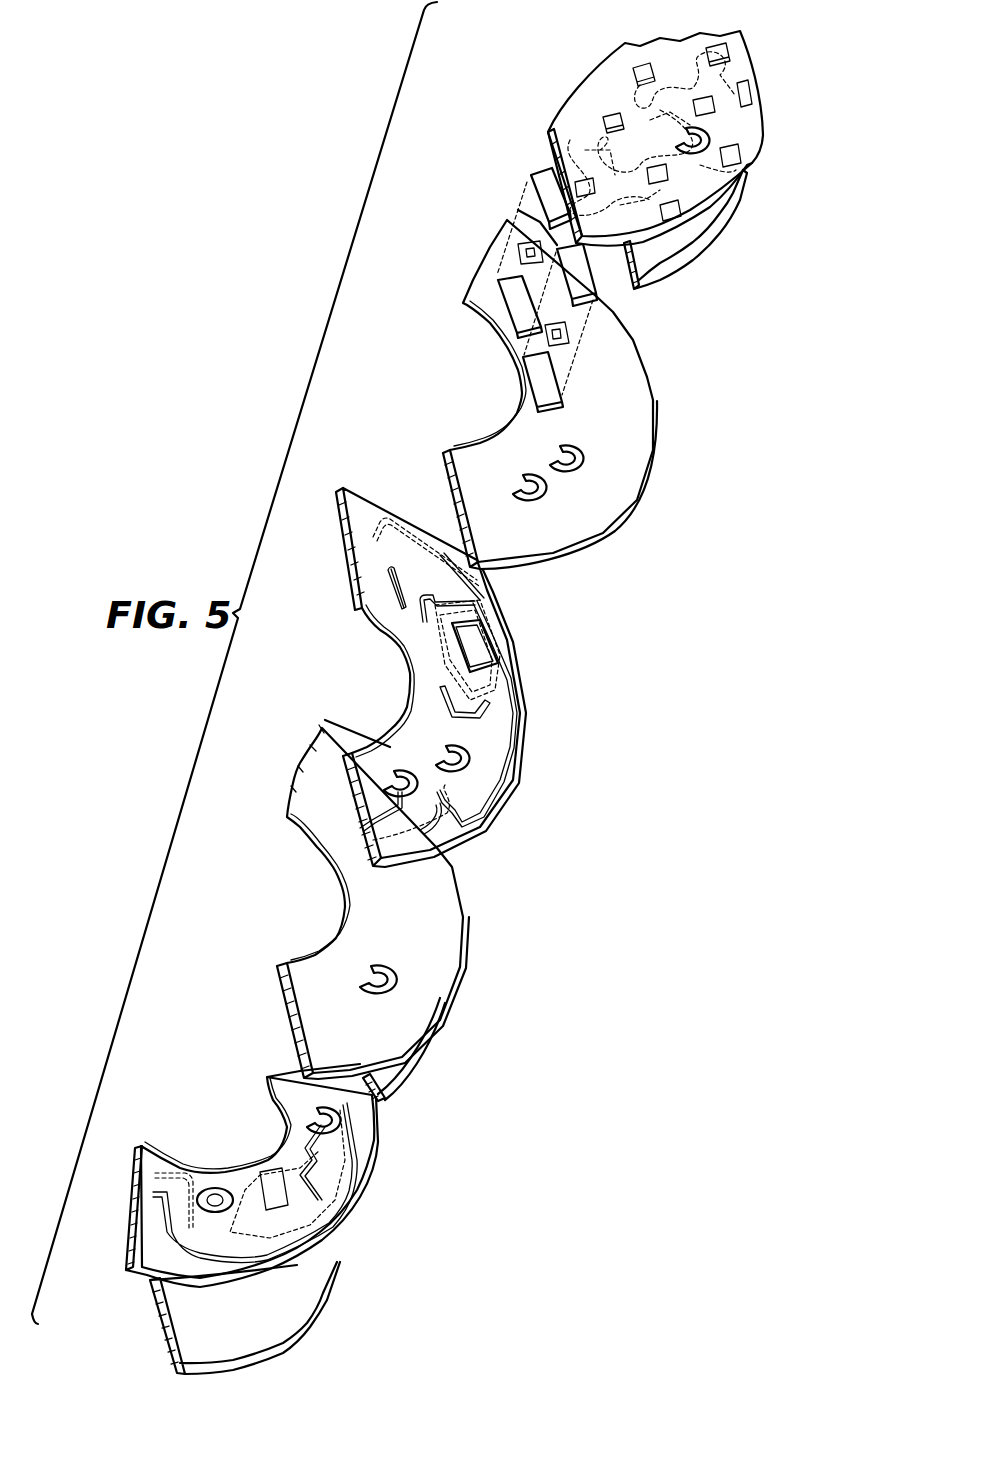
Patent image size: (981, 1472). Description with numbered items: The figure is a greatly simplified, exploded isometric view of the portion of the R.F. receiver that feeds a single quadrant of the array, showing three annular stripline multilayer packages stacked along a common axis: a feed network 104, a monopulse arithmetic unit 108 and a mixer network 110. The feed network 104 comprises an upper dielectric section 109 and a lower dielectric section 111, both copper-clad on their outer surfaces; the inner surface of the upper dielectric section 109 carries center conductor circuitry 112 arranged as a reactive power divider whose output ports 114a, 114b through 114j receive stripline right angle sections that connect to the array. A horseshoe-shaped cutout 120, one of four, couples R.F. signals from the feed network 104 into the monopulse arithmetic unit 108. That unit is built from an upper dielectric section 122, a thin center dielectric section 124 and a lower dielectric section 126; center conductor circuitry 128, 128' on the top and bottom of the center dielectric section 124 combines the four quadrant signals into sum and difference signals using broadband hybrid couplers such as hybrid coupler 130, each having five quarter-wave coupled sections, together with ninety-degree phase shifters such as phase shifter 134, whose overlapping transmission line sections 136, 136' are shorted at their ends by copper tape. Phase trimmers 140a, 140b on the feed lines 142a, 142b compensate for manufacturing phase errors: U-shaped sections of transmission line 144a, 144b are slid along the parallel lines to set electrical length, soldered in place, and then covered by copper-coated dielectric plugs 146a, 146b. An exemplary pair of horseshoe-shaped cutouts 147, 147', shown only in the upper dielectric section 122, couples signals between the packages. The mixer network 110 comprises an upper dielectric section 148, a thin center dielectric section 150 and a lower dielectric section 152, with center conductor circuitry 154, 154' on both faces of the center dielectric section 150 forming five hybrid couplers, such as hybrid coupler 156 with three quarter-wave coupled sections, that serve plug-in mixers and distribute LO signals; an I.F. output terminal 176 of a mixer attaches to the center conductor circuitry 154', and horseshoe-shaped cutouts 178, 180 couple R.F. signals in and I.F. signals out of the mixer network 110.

The feed network 104 is at (754, 168).
The monopulse arithmetic unit 108 is at (618, 731).
The upper dielectric section 109 is at (749, 41).
The mixer network 110 is at (422, 1245).
The lower dielectric section 111 is at (690, 258).
The center conductor circuitry 112 is at (677, 133).
The output port 114a is at (648, 67).
The output port 114b is at (715, 47).
The output port 114j is at (607, 125).
The horseshoe-shaped cutout 120 is at (713, 133).
The upper dielectric section 122 is at (656, 437).
The center dielectric section 124 is at (515, 643).
The lower dielectric section 126 is at (457, 912).
The center conductor circuitry 128 is at (503, 717).
The center conductor circuitry 128' is at (487, 576).
The hybrid coupler 130 is at (500, 664).
The phase shifter 134 is at (440, 598).
The transmission line section 136 is at (487, 641).
The transmission line section 136' is at (497, 646).
The phase trimmer 140a is at (412, 624).
The phase trimmer 140b is at (437, 692).
The feed line 142a is at (425, 758).
The feed line 142b is at (387, 571).
The U-shaped section of transmission line 144a is at (563, 334).
The U-shaped section of transmission line 144b is at (520, 259).
The dielectric plug 146a is at (590, 281).
The dielectric plug 146b is at (538, 178).
The horseshoe-shaped cutout 147 is at (592, 444).
The horseshoe-shaped cutout 147' is at (565, 491).
The upper dielectric section 148 is at (410, 1061).
The center dielectric section 150 is at (340, 1215).
The lower dielectric section 152 is at (305, 1331).
The center conductor circuitry 154 is at (281, 1159).
The center conductor circuitry 154' is at (328, 1174).
The hybrid coupler 156 is at (330, 1181).
The I.F. output terminal 176 is at (212, 1195).
The horseshoe-shaped cutout 178 is at (213, 1195).
The horseshoe-shaped cutout 180 is at (300, 1118).